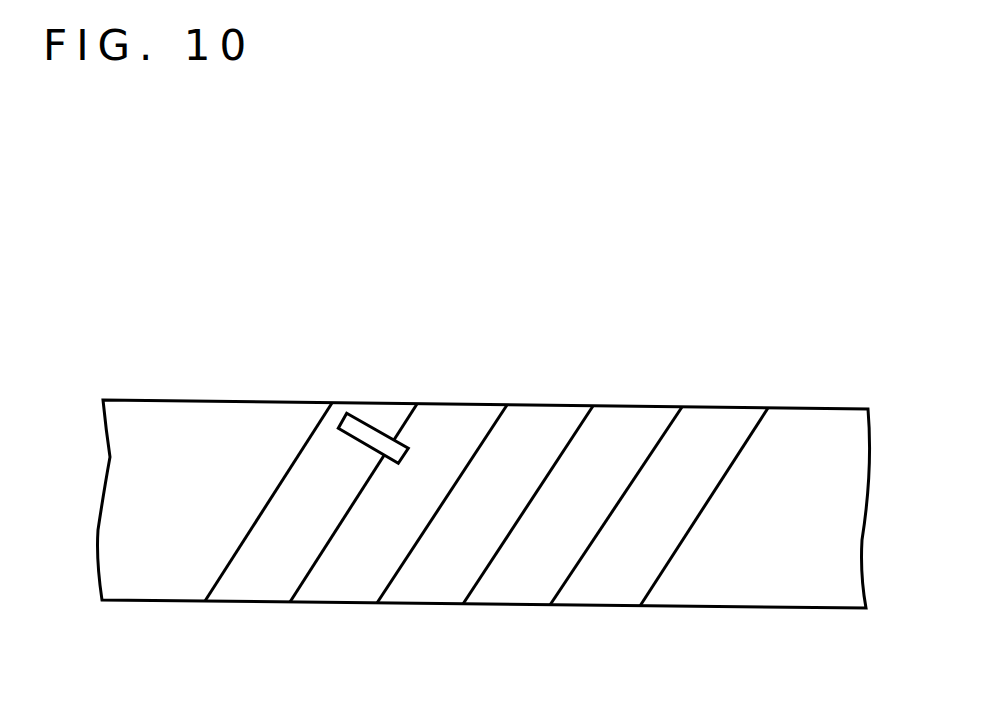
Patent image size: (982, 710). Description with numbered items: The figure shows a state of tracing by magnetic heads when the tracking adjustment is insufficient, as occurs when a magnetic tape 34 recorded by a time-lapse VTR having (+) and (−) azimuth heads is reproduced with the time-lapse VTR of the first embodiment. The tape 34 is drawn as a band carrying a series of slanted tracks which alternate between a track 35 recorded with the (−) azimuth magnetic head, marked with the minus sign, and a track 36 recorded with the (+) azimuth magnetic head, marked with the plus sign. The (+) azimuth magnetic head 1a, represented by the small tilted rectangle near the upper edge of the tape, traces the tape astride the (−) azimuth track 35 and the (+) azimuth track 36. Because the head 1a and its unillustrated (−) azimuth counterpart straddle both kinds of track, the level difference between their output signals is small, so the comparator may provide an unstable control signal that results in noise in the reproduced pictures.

The magnetic tape 34 is at (188, 400).
The track 35 is at (250, 602).
The track 36 is at (337, 603).
The (+) azimuth magnetic head 1a is at (376, 428).